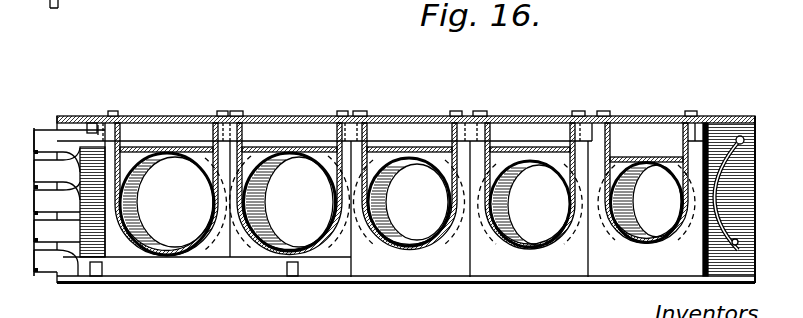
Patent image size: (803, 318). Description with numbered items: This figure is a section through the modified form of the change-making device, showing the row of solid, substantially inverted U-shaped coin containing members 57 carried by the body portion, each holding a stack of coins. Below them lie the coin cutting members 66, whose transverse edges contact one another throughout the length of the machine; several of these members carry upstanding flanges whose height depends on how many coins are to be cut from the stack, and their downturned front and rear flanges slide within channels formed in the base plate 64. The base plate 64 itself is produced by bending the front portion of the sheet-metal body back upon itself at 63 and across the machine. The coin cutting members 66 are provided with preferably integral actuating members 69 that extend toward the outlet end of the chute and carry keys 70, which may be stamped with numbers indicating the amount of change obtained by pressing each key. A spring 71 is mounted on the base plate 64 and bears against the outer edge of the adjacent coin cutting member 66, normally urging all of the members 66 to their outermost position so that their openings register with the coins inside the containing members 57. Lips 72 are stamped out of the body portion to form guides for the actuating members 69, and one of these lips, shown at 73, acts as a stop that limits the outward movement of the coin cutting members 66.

The coin containing member 57 is at (433, 238).
The bent-back portion of front portion 63 is at (438, 278).
The base plate 64 is at (384, 178).
The coin cutting member 66 is at (131, 252).
The actuating member 69 is at (513, 135).
The key 70 is at (36, 130).
The spring 71 is at (712, 173).
The lip 72 is at (92, 122).
The stop lip 73 is at (100, 124).